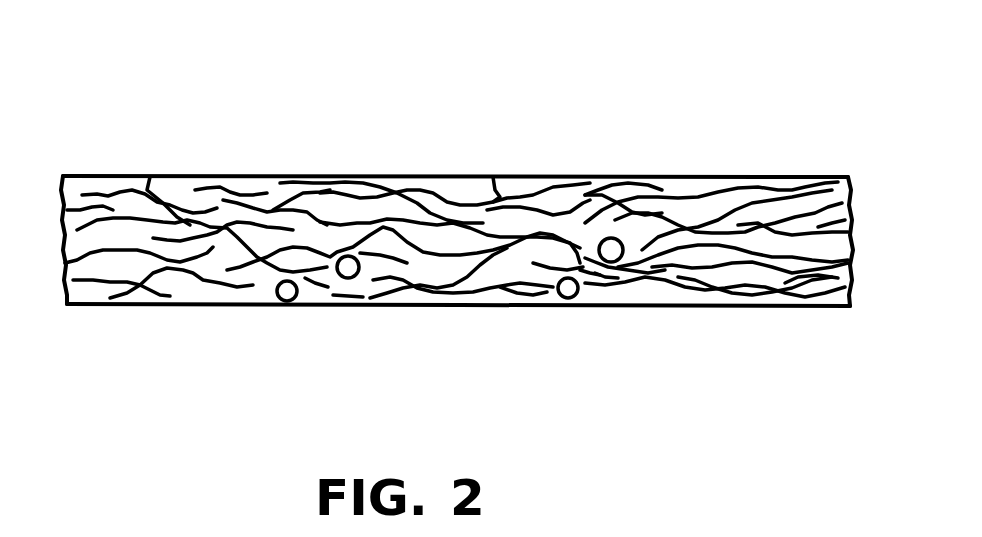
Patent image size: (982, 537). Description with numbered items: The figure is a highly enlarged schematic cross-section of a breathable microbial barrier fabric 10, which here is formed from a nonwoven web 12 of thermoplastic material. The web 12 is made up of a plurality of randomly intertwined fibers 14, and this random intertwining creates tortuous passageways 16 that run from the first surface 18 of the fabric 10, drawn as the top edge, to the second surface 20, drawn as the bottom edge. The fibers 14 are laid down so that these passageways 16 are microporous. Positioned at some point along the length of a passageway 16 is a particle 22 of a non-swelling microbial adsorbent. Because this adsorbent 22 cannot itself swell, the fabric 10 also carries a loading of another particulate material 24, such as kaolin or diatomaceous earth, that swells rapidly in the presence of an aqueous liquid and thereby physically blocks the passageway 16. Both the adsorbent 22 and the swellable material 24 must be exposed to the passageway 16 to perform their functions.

The microporous fabric 10 is at (586, 108).
The nonwoven web 12 is at (655, 347).
The fibers 14 is at (456, 196).
The tortuous passageways 16 is at (472, 327).
The first surface 18 is at (447, 135).
The second surface 20 is at (259, 347).
The microbial adsorbent particle 22 is at (410, 331).
The swellable particulate material 24 is at (521, 306).